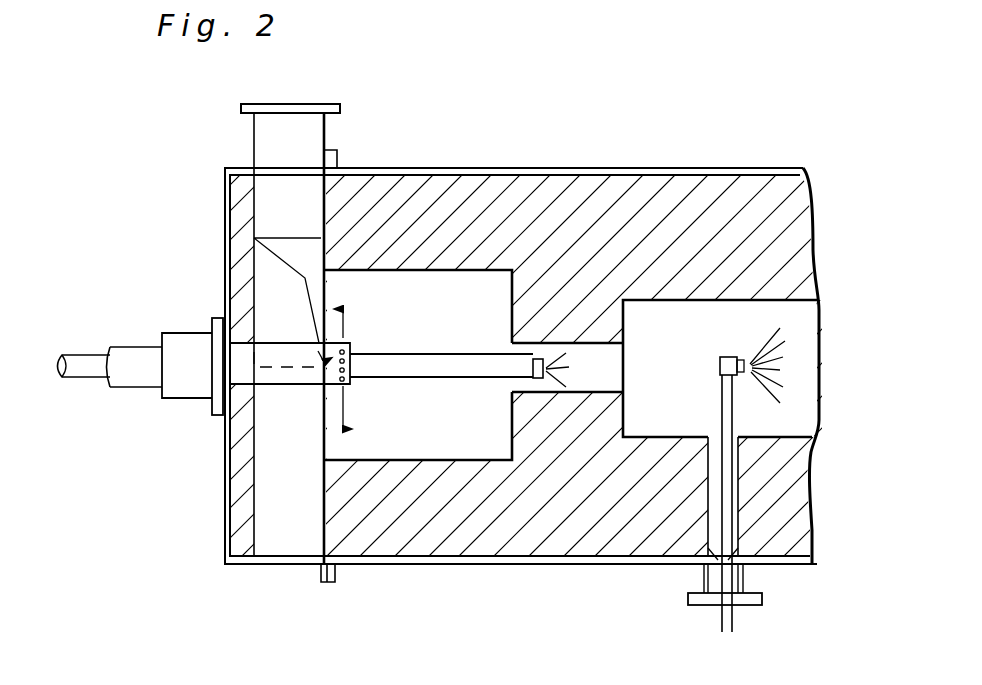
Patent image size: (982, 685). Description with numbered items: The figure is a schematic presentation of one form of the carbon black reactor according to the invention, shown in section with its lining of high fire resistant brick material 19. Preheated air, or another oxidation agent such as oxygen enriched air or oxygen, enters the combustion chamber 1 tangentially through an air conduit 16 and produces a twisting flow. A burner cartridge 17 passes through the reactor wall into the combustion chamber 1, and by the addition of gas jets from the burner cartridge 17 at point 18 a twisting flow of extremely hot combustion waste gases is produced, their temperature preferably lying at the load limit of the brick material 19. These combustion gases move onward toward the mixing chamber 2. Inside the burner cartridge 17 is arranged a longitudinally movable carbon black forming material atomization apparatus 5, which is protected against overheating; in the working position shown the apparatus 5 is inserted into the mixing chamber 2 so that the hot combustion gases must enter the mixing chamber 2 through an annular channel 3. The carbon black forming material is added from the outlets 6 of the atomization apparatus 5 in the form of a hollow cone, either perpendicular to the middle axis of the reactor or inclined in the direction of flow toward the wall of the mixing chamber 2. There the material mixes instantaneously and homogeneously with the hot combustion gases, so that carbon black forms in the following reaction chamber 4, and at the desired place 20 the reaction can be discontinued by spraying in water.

The combustion chamber 1 is at (409, 306).
The mixing chamber 2 is at (607, 380).
The annular channel 3 is at (522, 350).
The reaction chamber 4 is at (688, 416).
The carbon black forming material atomization apparatus 5 is at (86, 372).
The outlets of the atomization apparatus 6 is at (537, 390).
The air conduit 16 is at (310, 133).
The burner cartridge 17 is at (140, 383).
The point of gas jet addition 18 is at (350, 383).
The high fire resistant brick material 19 is at (577, 188).
The place of water spraying 20 is at (770, 352).